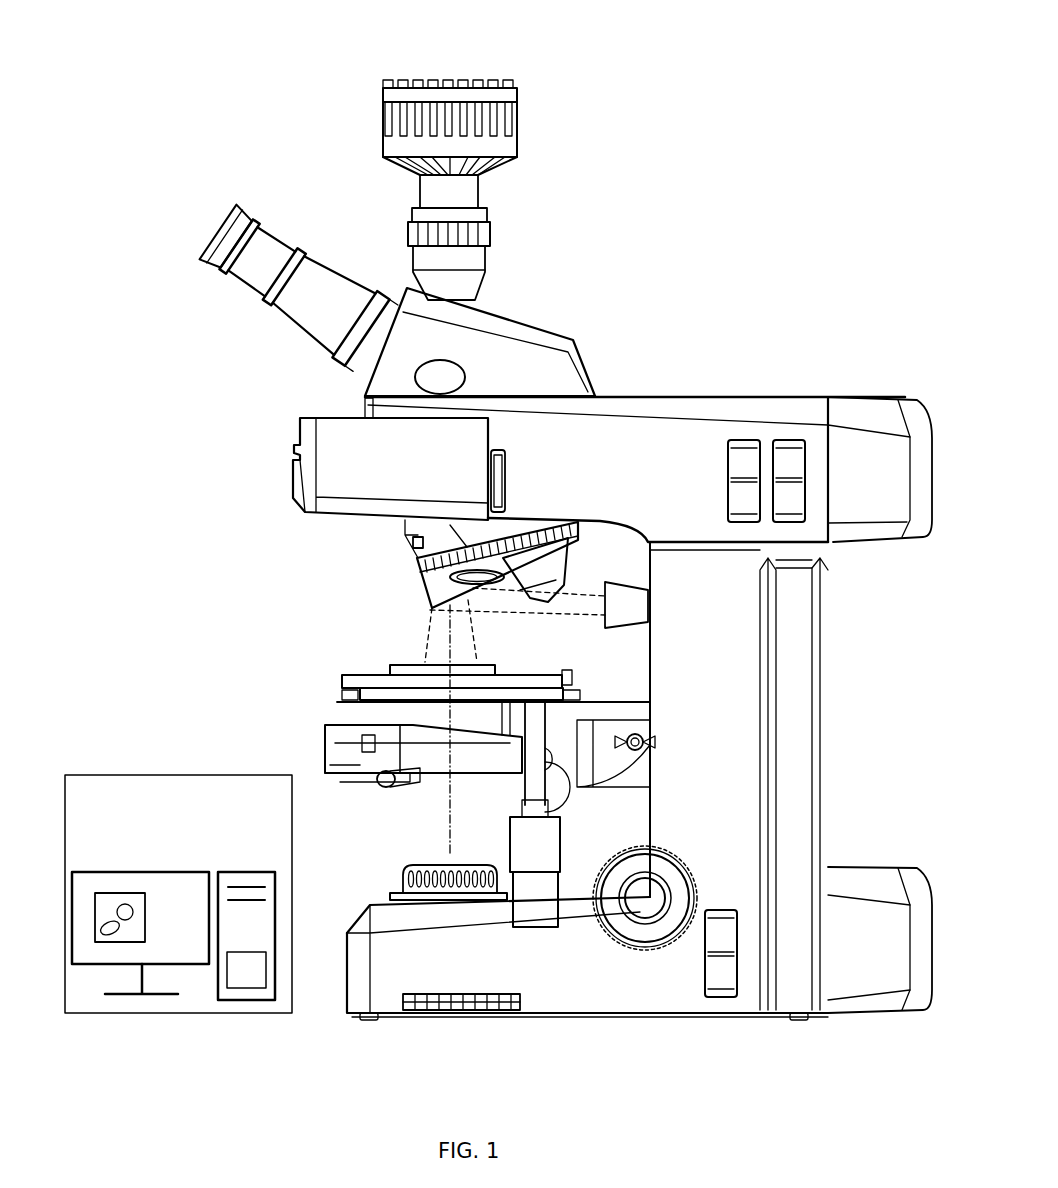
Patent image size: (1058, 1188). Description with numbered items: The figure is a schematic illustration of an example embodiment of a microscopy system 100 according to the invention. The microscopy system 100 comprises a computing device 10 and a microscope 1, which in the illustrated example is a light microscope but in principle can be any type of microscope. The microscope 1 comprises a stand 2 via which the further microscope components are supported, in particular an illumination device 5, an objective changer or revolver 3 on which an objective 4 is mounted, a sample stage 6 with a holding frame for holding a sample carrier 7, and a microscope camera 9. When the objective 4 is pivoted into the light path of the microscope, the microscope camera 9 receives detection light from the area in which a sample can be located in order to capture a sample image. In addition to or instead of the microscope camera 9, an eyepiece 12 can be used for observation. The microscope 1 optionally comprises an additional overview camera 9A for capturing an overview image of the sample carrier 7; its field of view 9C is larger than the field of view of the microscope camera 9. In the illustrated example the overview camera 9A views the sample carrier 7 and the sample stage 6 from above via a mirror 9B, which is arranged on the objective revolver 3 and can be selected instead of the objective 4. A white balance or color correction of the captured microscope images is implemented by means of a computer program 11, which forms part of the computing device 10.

The microscopy system 100 is at (696, 127).
The microscope 1 is at (756, 364).
The stand 2 is at (803, 837).
The objective changer/revolver 3 is at (410, 543).
The objective 4 is at (540, 570).
The illumination device 5 is at (407, 955).
The sample stage 6 is at (367, 698).
The sample carrier 7 is at (385, 670).
The microscope camera 9 is at (503, 118).
The overview camera 9A is at (643, 617).
The mirror 9B is at (430, 596).
The field of view 9C is at (430, 627).
The computing device 10 is at (193, 830).
The computer program 11 is at (259, 980).
The eyepiece 12 is at (220, 268).